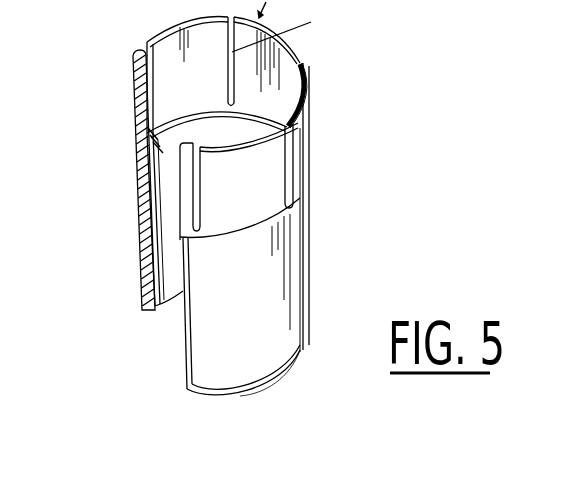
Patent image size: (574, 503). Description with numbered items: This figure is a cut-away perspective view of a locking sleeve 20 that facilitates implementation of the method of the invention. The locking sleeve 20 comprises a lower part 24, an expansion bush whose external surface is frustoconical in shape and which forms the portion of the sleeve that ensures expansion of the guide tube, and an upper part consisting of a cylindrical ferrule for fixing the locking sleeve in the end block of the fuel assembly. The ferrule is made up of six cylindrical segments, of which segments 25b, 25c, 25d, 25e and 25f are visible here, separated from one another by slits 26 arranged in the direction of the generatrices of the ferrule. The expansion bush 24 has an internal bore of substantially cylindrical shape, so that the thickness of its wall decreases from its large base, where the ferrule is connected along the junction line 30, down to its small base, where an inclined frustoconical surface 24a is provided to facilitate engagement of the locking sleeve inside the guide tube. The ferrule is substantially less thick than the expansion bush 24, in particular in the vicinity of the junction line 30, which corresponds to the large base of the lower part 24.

The locking sleeve 20 is at (312, 222).
The lower part 24 is at (267, 325).
The inclined frustoconical surface 24a is at (268, 389).
The cylindrical segment 25b is at (263, 177).
The cylindrical segment 25c is at (311, 128).
The cylindrical segment 25d is at (267, 88).
The cylindrical segment 25e is at (223, 77).
The cylindrical segment 25f is at (131, 103).
The slits 26 is at (305, 64).
The junction line 30 is at (238, 235).